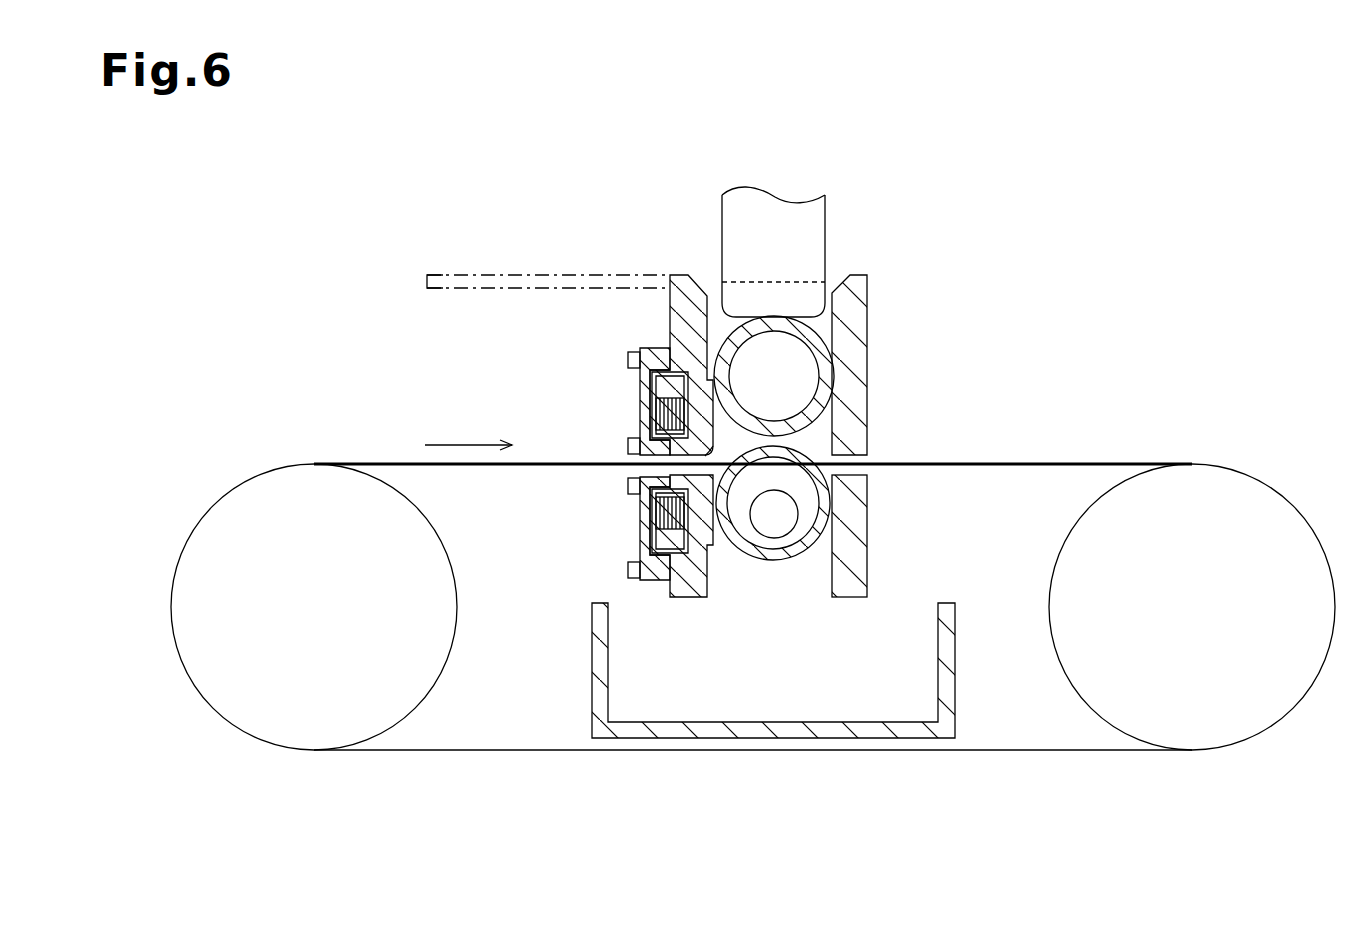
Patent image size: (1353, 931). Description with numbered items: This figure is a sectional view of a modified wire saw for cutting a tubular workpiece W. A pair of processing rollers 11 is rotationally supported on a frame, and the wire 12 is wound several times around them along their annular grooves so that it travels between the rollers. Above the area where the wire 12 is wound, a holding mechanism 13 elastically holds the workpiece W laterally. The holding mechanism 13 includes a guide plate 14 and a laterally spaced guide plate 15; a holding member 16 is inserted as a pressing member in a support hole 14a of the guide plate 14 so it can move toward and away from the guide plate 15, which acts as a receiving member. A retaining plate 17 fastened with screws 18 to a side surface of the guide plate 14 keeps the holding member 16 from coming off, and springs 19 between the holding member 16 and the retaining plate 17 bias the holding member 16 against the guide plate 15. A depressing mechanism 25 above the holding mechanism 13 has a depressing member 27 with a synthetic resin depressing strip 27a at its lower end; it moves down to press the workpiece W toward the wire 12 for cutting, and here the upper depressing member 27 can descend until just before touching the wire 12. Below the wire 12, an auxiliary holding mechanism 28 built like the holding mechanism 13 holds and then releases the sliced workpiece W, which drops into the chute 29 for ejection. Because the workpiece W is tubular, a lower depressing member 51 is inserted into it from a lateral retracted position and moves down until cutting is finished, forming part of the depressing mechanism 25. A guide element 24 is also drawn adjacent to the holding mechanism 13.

The processing roller 11 is at (310, 466).
The wire 12 is at (393, 463).
The holding mechanism 13 is at (689, 271).
The guide plate 14 is at (673, 311).
The support hole 14a is at (705, 458).
The guide plate 15 is at (862, 328).
The holding member 16 is at (652, 398).
The retaining plate 17 is at (640, 350).
The screw 18 is at (628, 360).
The spring 19 is at (654, 418).
The guide plate 24 is at (444, 275).
The depressing mechanism 25 is at (817, 217).
The depressing member 27 is at (770, 207).
The depressing strip 27a is at (808, 288).
The auxiliary holding mechanism 28 is at (719, 603).
The chute 29 is at (592, 656).
The lower depressing member 51 is at (775, 537).
The workpiece W is at (830, 440).